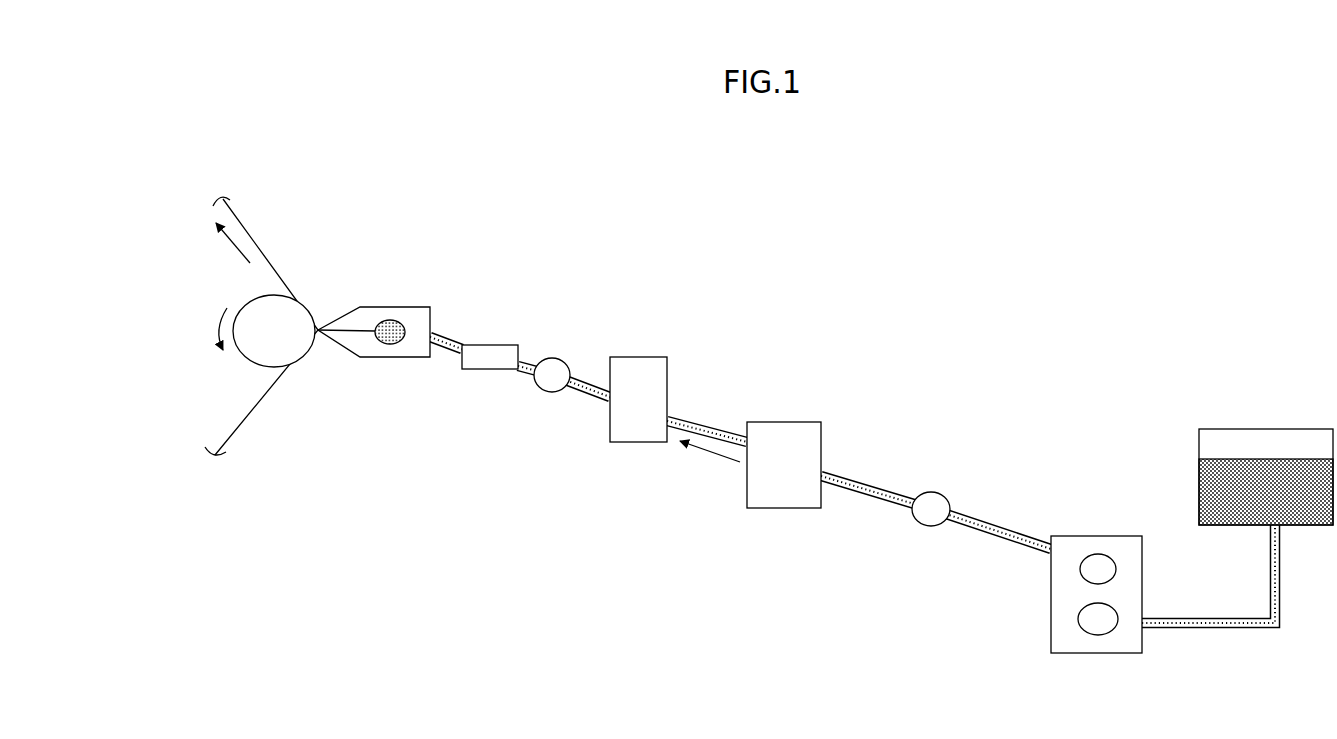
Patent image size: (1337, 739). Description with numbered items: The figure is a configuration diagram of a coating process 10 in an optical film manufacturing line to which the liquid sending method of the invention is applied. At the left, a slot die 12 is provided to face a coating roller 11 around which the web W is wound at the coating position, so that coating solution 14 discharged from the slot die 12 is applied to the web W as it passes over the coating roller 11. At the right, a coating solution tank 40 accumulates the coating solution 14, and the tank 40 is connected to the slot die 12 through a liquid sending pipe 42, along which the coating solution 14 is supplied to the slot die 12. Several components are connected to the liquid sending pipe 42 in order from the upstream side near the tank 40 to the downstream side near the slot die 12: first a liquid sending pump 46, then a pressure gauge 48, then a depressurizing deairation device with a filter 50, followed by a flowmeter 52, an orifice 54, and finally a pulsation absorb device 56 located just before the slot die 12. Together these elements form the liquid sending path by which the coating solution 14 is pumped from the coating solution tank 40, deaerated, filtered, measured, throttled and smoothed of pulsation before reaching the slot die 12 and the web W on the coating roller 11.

The coating process 10 is at (860, 278).
The coating roller 11 is at (253, 347).
The slot die 12 is at (393, 307).
The coating solution 14 is at (1272, 458).
The coating solution tank 40 is at (1198, 477).
The liquid sending pipe 42 is at (868, 497).
The liquid sending pump 46 is at (1102, 536).
The pressure gauge 48 is at (930, 492).
The depressurizing deairation device with a filter 50 is at (790, 422).
The flowmeter 52 is at (640, 357).
The orifice 54 is at (552, 358).
The pulsation absorb device 56 is at (485, 345).
The web W is at (262, 250).